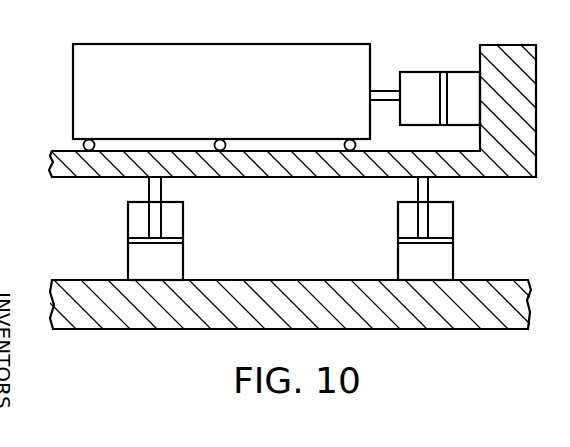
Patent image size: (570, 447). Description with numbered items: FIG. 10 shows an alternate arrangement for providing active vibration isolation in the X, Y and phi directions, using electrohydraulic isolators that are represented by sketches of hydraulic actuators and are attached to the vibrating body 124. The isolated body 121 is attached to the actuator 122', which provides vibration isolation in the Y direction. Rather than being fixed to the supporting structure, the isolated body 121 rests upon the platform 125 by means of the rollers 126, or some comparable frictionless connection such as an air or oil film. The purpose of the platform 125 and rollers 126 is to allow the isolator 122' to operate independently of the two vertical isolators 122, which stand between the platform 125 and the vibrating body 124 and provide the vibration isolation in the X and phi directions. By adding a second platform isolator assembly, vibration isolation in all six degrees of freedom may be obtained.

The isolated body 121 is at (298, 55).
The vertical isolators 122 is at (290, 228).
The actuator 122' is at (425, 74).
The vibrating body 124 is at (163, 322).
The platform 125 is at (335, 172).
The rollers 126 is at (86, 139).